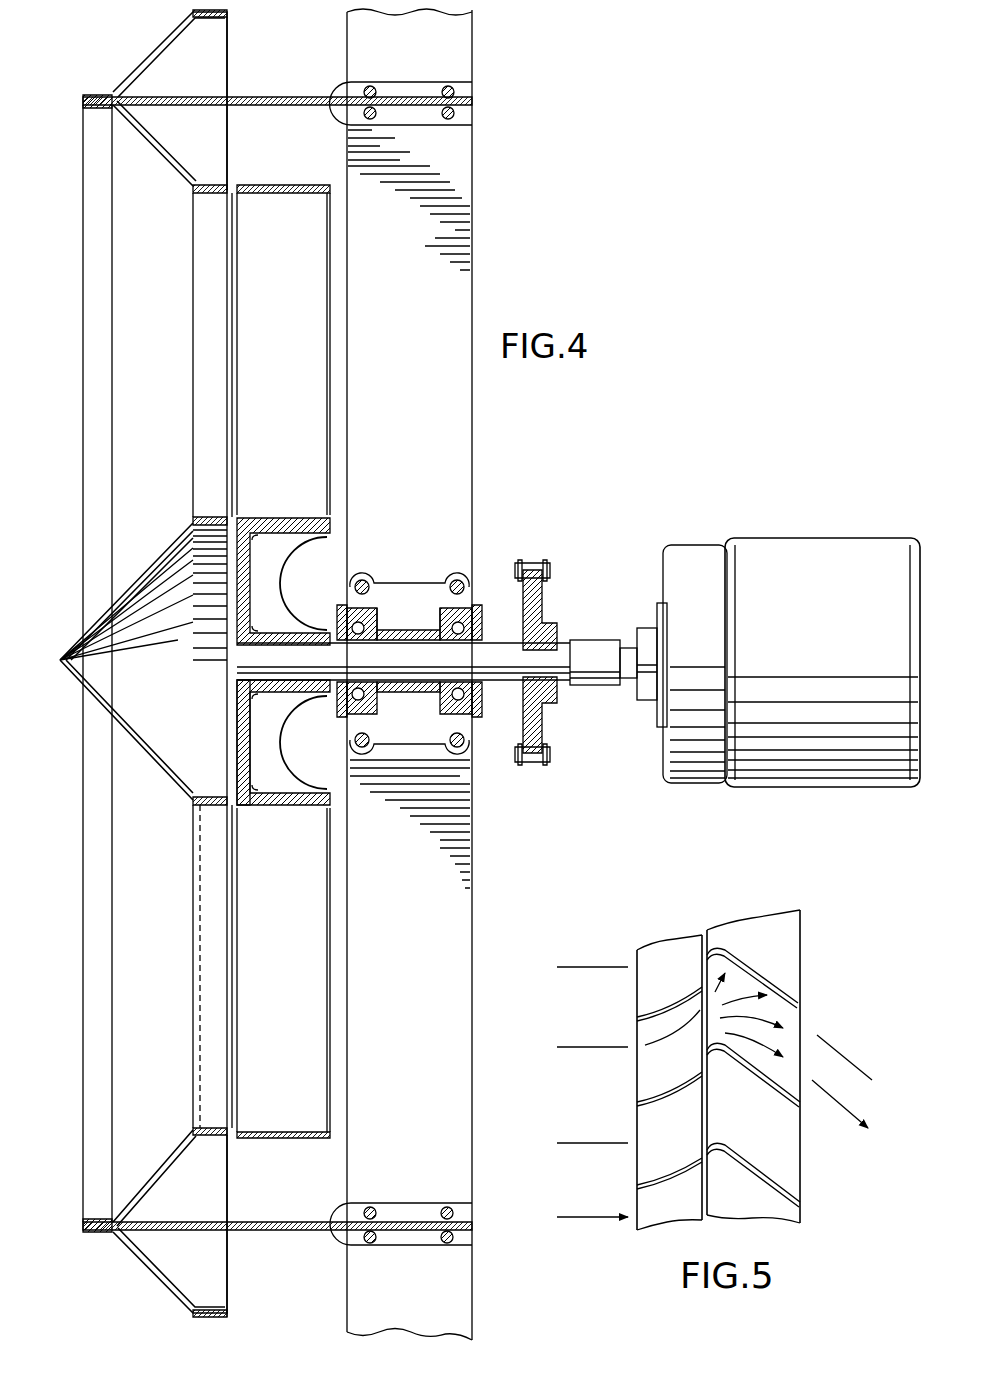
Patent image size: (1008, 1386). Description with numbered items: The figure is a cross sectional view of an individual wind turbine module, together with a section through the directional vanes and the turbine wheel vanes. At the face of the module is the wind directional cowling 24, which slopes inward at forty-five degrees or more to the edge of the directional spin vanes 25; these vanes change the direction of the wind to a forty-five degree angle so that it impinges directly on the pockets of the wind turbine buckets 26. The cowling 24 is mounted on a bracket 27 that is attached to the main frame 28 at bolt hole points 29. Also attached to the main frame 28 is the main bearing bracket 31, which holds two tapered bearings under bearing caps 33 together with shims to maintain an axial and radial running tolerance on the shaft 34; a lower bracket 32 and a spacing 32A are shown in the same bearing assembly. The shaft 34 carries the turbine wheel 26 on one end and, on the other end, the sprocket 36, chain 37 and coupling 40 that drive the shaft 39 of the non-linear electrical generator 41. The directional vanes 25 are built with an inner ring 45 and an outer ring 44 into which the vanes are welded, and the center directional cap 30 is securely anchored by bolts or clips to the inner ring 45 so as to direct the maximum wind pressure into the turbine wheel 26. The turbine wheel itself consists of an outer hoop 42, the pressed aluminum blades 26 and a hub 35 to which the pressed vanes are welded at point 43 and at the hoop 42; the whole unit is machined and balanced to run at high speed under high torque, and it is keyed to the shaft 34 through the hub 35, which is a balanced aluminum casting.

In FIG. 4, the wind directional cowling 24 is at (130, 140).
In FIG. 4, the directional spin vanes 25 is at (202, 320).
In FIG. 5, the directional spin vanes 25 is at (660, 1092).
In FIG. 4, the turbine wheel buckets 26 is at (294, 307).
In FIG. 5, the turbine wheel buckets 26 is at (730, 1055).
In FIG. 4, the bracket 27 is at (255, 97).
In FIG. 4, the main frame 28 is at (470, 158).
In FIG. 4, the bolt hole points 29 is at (376, 88).
In FIG. 4, the center directional cap 30 is at (150, 562).
In FIG. 4, the main bearing bracket 31 is at (380, 580).
In FIG. 4, the lower bearing bracket 32 is at (440, 700).
In FIG. 4, the bracket spacing gap 32A is at (377, 615).
In FIG. 4, the bearing caps 33 is at (343, 605).
In FIG. 4, the shaft 34 is at (240, 657).
In FIG. 4, the hub 35 is at (243, 693).
In FIG. 4, the sprocket 36 is at (535, 610).
In FIG. 4, the chain 37 is at (546, 562).
In FIG. 4, the generator shaft 39 is at (628, 688).
In FIG. 4, the coupling 40 is at (598, 640).
In FIG. 4, the non-linear electrical generator 41 is at (808, 610).
In FIG. 4, the outer hoop 42 is at (282, 185).
In FIG. 4, the weld point 43 is at (282, 518).
In FIG. 4, the outer ring 44 is at (197, 197).
In FIG. 4, the inner ring 45 is at (205, 517).